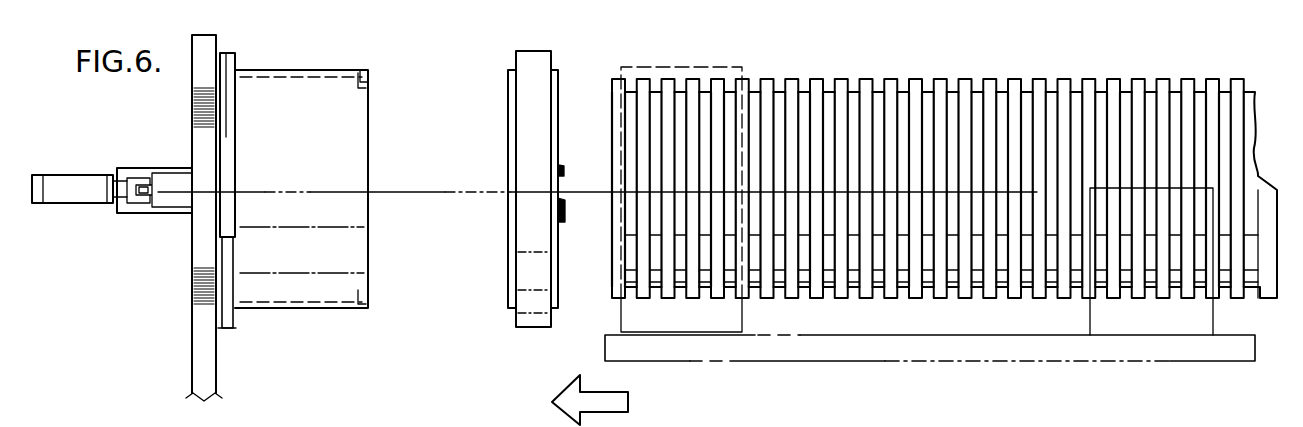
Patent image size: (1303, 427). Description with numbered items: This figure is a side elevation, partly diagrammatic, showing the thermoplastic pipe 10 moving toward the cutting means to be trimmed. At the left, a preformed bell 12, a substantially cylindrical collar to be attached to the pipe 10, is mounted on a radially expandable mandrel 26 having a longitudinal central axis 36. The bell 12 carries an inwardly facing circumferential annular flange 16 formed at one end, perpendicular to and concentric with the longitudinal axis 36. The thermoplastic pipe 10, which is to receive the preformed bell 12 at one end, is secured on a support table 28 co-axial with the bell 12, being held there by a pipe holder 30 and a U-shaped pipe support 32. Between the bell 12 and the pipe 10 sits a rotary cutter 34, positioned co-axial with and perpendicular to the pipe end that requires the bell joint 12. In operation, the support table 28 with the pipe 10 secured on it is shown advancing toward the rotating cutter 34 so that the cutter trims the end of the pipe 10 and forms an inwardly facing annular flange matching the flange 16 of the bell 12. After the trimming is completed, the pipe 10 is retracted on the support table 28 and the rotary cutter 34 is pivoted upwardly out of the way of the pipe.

The thermoplastic pipe 10 is at (837, 74).
The preformed bell 12 is at (303, 69).
The inwardly facing circumferential annular flange 16 is at (370, 82).
The radially expandable mandrel 26 is at (345, 93).
The support table 28 is at (1170, 352).
The pipe holder 30 is at (715, 318).
The U-shaped pipe support 32 is at (1208, 300).
The rotary cutter 34 is at (533, 53).
The longitudinal central axis 36 is at (441, 196).